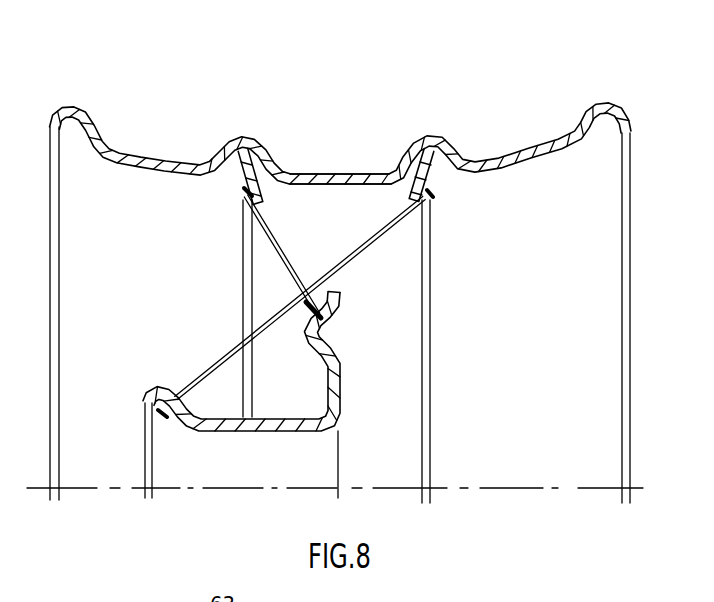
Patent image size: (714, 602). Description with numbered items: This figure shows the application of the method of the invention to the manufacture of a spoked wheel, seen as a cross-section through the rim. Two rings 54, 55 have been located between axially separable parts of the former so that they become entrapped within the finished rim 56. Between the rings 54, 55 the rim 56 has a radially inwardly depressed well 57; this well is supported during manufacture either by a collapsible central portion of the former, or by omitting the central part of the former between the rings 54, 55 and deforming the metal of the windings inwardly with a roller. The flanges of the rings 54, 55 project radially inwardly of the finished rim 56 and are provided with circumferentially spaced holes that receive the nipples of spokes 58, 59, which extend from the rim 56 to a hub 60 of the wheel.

The ring 54 is at (240, 168).
The ring 55 is at (436, 176).
The rim 56 is at (178, 158).
The radially inwardly depressed well 57 is at (320, 173).
The spoke 58 is at (282, 243).
The spoke 59 is at (356, 262).
The hub 60 is at (272, 425).